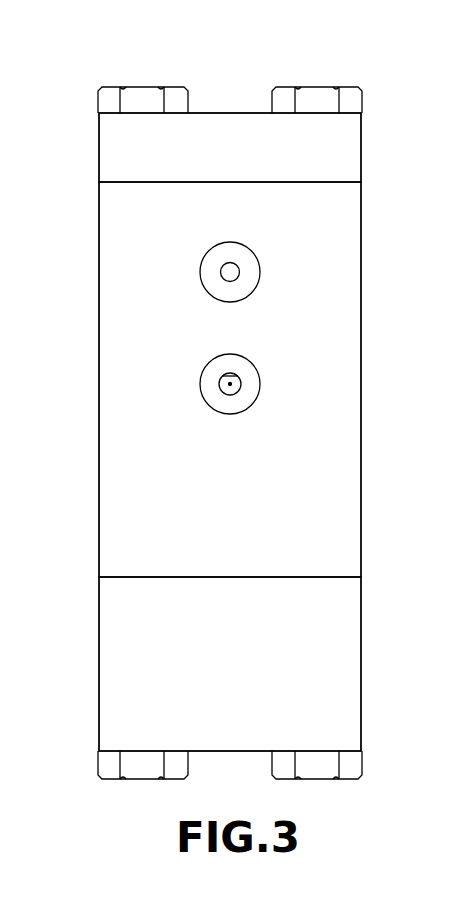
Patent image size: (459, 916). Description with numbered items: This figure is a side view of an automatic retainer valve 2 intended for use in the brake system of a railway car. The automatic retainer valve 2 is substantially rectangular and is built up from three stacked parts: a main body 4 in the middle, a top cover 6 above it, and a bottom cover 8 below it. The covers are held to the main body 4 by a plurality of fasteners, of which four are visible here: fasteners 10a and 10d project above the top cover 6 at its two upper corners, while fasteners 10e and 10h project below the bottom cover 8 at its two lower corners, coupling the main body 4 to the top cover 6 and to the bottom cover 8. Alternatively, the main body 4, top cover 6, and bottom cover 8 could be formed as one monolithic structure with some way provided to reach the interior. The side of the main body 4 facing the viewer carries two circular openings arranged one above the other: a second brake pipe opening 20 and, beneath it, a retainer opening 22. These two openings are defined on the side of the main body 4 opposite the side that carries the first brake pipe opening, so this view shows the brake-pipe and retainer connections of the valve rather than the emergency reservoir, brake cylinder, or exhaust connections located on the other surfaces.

The automatic retainer valve 2 is at (82, 458).
The main body 4 is at (110, 265).
The top cover 6 is at (108, 153).
The bottom cover 8 is at (108, 648).
The fastener 10a is at (143, 90).
The fastener 10d is at (315, 90).
The fastener 10e is at (104, 769).
The fastener 10h is at (352, 764).
The second brake pipe opening 20 is at (260, 263).
The retainer opening 22 is at (260, 380).